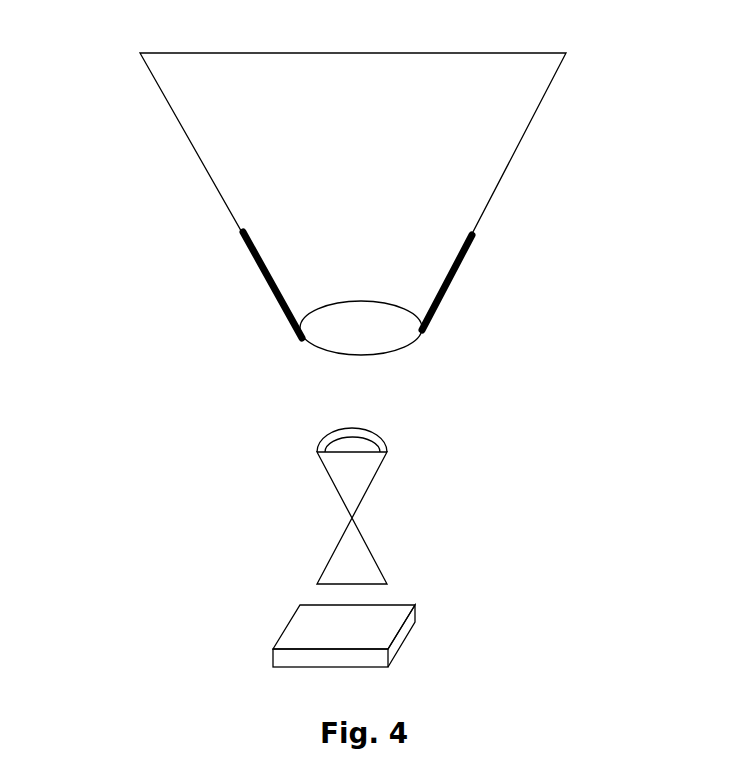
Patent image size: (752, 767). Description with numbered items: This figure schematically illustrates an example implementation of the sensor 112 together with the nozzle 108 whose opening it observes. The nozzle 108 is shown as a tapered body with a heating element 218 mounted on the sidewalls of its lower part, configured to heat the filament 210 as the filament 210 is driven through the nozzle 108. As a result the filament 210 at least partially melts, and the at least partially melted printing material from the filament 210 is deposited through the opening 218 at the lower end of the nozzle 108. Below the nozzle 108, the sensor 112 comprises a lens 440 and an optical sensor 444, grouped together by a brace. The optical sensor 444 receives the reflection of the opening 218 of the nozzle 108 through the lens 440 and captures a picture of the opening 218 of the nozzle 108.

The nozzle 108 is at (208, 173).
The heating element / nozzle opening 218 is at (417, 333).
The filament 210 is at (333, 335).
The lens 440 is at (378, 482).
The optical sensor 444 is at (415, 622).
The sensor 112 is at (495, 547).